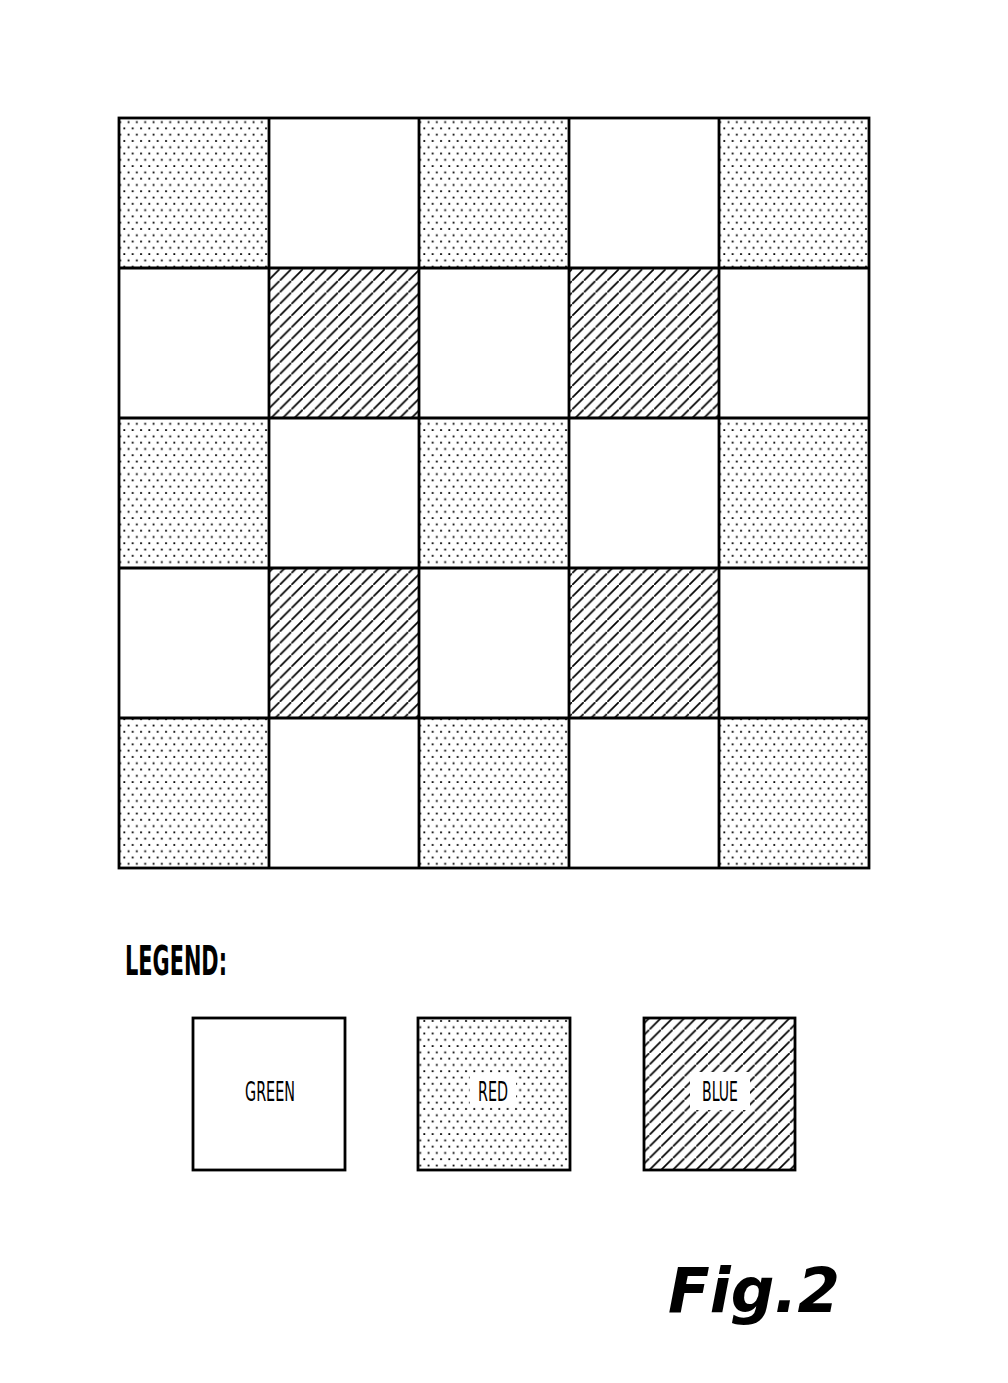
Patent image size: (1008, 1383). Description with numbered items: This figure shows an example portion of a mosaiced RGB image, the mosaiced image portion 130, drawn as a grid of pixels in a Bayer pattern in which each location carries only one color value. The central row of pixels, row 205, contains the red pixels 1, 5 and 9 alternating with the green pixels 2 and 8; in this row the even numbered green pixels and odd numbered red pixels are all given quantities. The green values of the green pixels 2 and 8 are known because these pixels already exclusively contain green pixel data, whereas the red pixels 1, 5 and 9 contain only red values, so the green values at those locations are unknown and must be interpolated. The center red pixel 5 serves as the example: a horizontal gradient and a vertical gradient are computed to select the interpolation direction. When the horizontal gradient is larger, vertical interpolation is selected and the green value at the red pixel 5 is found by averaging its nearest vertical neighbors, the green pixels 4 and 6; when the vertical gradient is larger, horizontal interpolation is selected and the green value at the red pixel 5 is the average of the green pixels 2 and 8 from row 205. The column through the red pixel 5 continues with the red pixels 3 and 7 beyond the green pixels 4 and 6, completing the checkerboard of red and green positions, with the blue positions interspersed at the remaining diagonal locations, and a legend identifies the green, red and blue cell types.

The color filter array 130 is at (460, 434).
The row of pixels 205 is at (451, 494).
The red pixel 1 is at (194, 493).
The green pixel 2 is at (344, 493).
The red pixel R3 3 is at (494, 193).
The green pixel 4 is at (494, 343).
The red pixel 5 is at (494, 493).
The green pixel 6 is at (494, 643).
The red pixel R7 7 is at (494, 793).
The green pixel 8 is at (644, 493).
The red pixel 9 is at (794, 493).